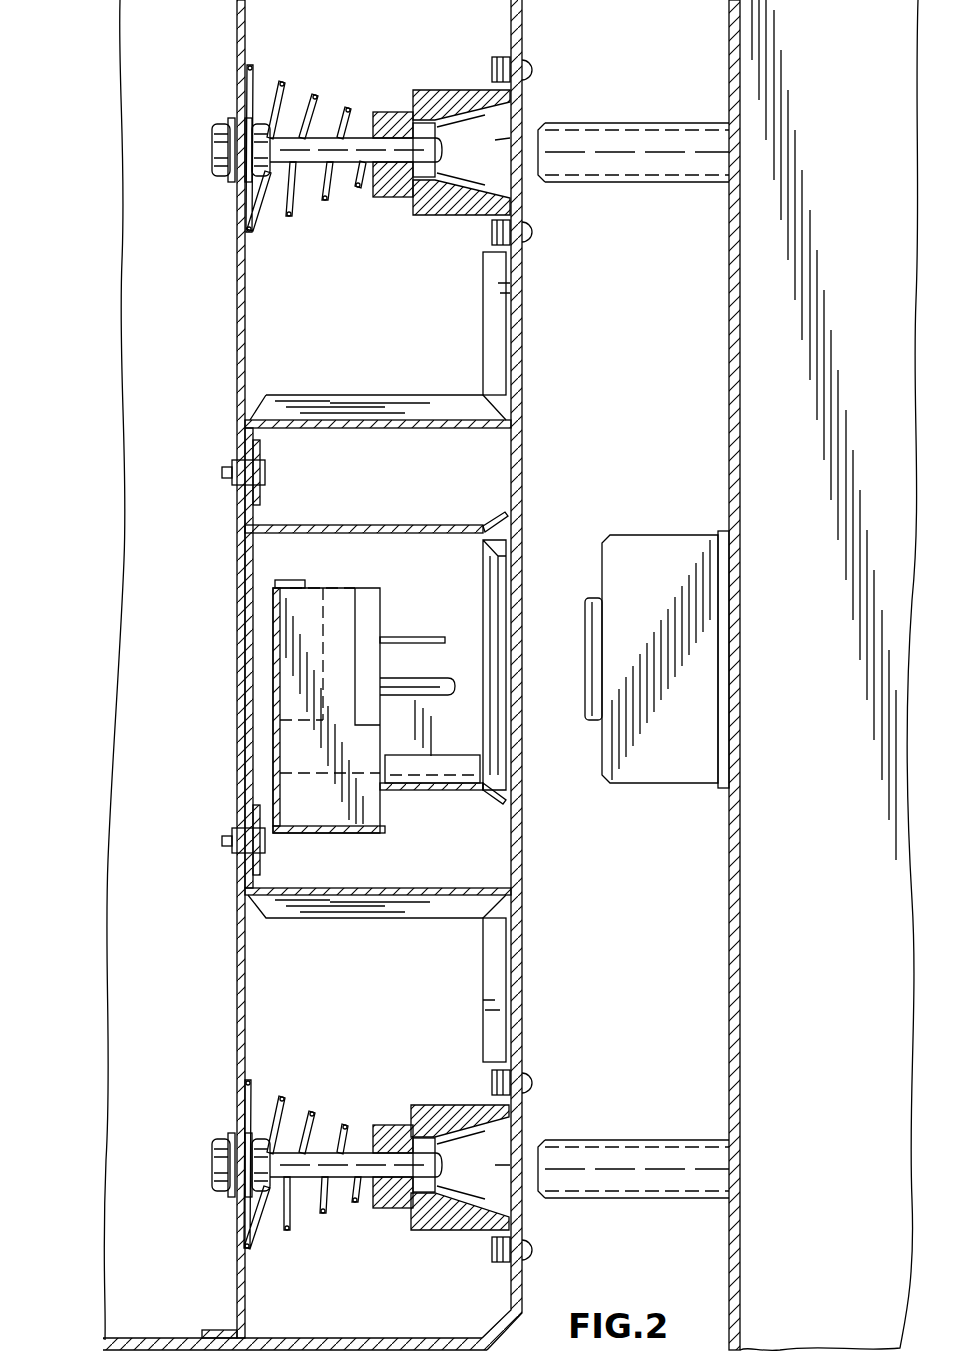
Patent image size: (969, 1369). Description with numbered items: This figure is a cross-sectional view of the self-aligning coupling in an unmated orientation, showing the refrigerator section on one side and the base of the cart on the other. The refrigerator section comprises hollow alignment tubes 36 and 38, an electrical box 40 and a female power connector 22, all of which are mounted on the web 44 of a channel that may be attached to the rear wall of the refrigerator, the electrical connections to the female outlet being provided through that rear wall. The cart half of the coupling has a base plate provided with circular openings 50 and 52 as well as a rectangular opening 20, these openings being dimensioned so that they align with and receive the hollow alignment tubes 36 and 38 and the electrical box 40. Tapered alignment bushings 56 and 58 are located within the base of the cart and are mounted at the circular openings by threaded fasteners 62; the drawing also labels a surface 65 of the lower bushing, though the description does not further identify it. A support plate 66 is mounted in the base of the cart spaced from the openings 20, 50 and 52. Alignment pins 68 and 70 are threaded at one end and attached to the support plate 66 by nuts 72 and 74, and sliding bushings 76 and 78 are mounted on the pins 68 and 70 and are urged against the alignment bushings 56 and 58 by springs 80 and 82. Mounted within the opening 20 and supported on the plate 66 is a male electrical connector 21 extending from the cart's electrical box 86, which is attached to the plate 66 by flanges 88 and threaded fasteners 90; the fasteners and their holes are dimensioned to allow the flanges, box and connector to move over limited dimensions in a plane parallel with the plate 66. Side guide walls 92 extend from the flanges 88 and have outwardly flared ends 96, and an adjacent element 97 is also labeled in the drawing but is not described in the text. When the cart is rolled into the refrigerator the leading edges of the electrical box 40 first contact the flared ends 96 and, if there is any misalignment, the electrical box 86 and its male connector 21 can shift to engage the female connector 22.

The rectangular opening 20 is at (500, 462).
The male electrical connector 21 is at (422, 634).
The female power connector 22 is at (590, 722).
The hollow alignment tube 36 is at (668, 1160).
The hollow alignment tube 38 is at (666, 135).
The electrical box 40 is at (665, 550).
The web 44 is at (742, 822).
The circular opening 50 is at (518, 118).
The circular opening 52 is at (500, 1140).
The tapered alignment bushing 56 is at (437, 90).
The tapered alignment bushing 58 is at (431, 1105).
The threaded fastener 62 is at (527, 70).
The bore surface 65 is at (496, 1193).
The support plate 66 is at (237, 945).
The alignment pin 68 is at (292, 143).
The alignment pin 70 is at (283, 1156).
The nut 72 is at (215, 130).
The nut 74 is at (212, 1150).
The sliding bushing 76 is at (397, 198).
The sliding bushing 78 is at (388, 1122).
The spring 80 is at (291, 218).
The spring 82 is at (323, 1214).
The electrical box 86 is at (327, 588).
The flange 88 is at (243, 505).
The threaded fastener 90 is at (228, 478).
The side guide wall 92 is at (383, 525).
The outwardly flared end 96 is at (495, 513).
The switch body 97 is at (498, 580).